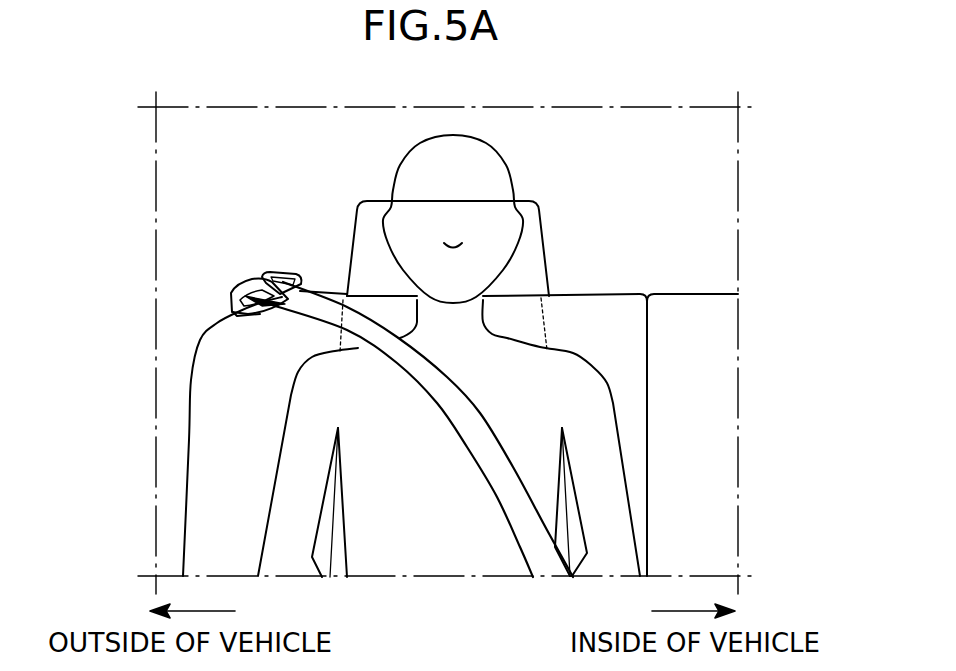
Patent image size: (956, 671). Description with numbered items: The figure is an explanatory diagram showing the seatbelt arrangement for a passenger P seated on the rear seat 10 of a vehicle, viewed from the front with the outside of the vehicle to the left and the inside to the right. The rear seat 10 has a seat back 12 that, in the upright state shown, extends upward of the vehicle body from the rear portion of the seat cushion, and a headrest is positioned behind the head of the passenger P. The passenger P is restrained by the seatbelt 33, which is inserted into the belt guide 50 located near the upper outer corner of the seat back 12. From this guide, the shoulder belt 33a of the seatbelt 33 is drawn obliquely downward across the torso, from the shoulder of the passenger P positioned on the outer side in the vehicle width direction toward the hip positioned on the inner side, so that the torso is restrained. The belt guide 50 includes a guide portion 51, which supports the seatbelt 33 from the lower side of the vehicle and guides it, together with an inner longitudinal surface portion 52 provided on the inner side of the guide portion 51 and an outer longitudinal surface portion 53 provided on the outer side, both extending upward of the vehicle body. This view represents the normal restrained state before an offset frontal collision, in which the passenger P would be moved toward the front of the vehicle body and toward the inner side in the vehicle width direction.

The passenger P is at (503, 160).
The rear seat 10 is at (418, 388).
The seat back 12 is at (205, 478).
The seatbelt 33 is at (425, 429).
The shoulder belt 33a is at (470, 412).
The belt guide 50 is at (217, 294).
The guide portion 51 is at (250, 349).
The inner longitudinal surface portion 52 is at (288, 273).
The outer longitudinal surface portion 53 is at (238, 286).